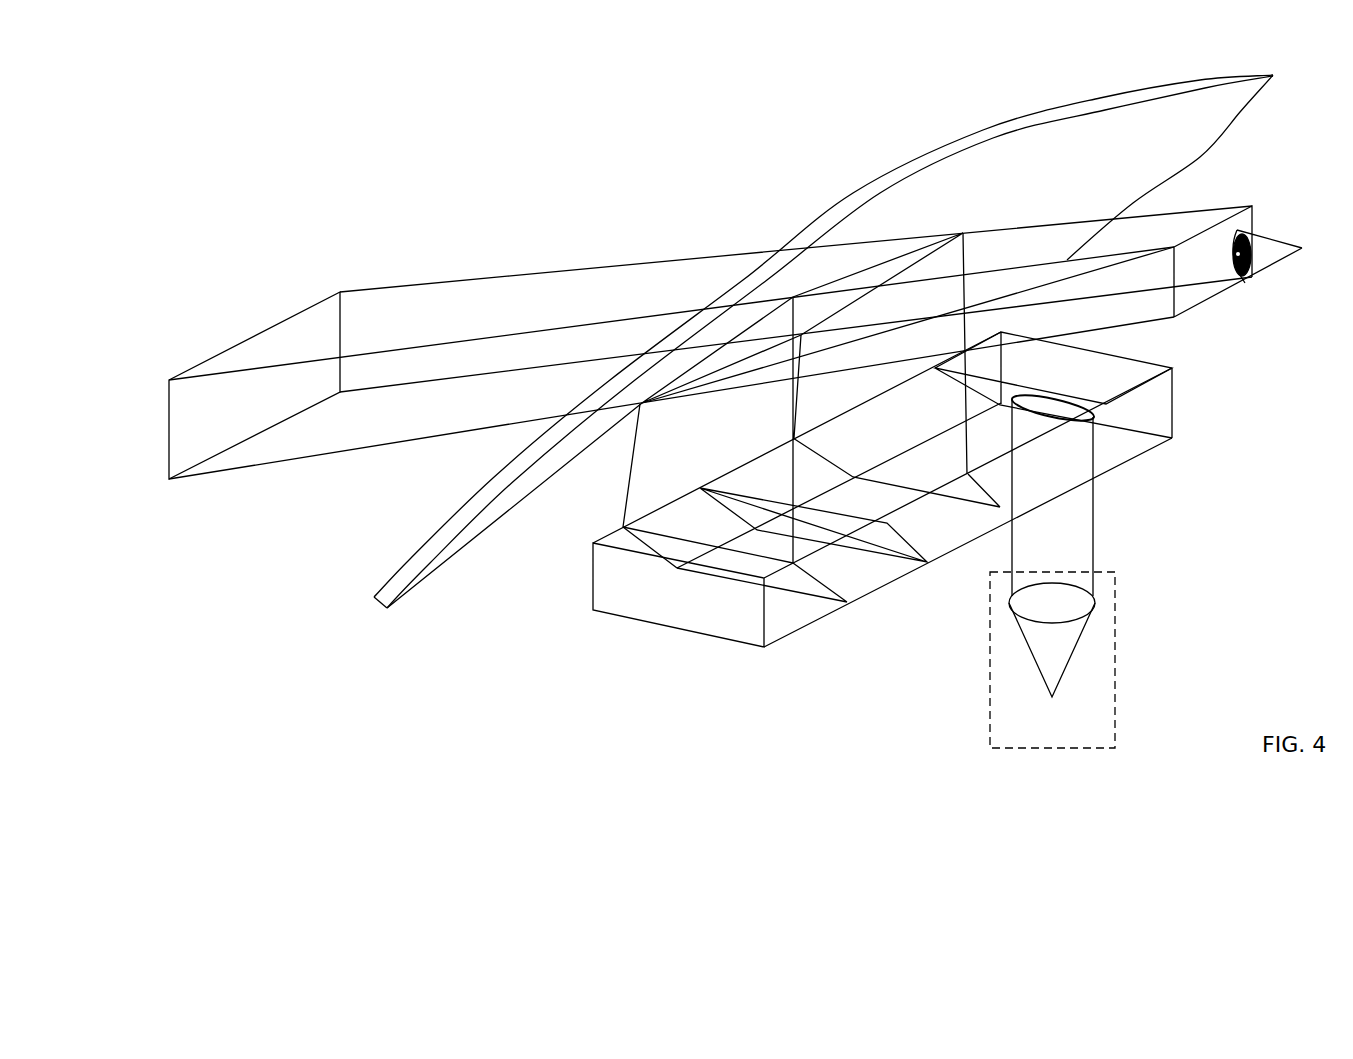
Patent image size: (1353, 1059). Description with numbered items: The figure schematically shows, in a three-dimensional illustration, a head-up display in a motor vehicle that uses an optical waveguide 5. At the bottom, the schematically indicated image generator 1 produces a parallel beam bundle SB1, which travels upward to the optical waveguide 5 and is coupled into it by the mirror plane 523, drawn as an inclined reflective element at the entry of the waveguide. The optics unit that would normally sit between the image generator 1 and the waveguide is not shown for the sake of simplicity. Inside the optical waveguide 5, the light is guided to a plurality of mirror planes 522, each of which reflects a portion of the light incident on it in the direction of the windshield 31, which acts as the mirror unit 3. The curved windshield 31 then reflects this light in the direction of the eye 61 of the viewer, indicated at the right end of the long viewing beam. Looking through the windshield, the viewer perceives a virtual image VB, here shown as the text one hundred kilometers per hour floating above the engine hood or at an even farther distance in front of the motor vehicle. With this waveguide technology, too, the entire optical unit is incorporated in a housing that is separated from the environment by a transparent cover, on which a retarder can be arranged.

The mirror unit 3 is at (823, 341).
The windshield 31 is at (905, 182).
The eye 61 is at (1275, 233).
The virtual image VB is at (173, 460).
The mirror planes 522 is at (1012, 500).
The optical waveguide 5 is at (1177, 407).
The mirror plane 523 is at (1093, 400).
The parallel beam bundle SB1 is at (1097, 530).
The image generator 1 is at (1117, 600).